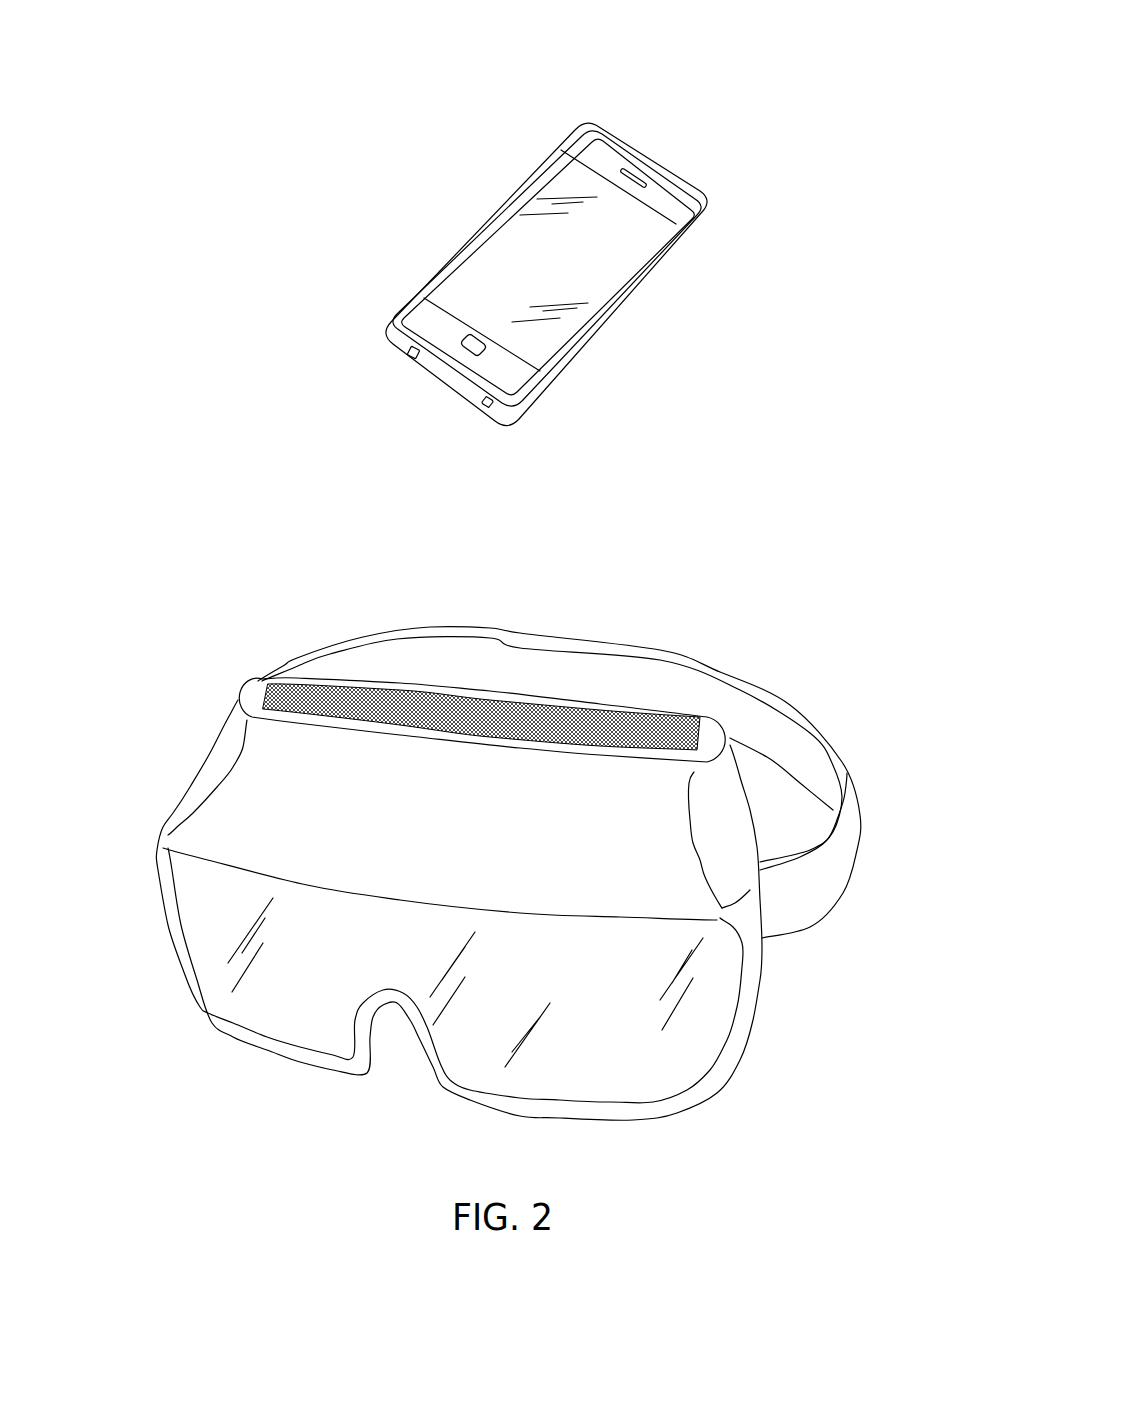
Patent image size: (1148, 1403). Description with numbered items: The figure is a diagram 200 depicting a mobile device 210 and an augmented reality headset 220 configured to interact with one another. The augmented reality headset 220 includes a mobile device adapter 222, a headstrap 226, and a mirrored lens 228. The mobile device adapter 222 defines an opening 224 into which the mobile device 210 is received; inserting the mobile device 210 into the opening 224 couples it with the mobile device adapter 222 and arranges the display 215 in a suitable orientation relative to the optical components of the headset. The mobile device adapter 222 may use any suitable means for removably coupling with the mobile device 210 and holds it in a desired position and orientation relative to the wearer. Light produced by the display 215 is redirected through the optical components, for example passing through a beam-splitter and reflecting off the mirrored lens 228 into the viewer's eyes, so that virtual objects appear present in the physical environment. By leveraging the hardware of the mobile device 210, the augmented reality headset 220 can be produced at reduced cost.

The diagram 200 is at (758, 45).
The mobile device 210 is at (672, 167).
The display 215 is at (493, 263).
The augmented reality headset 220 is at (184, 644).
The mobile device adapter 222 is at (180, 800).
The opening 224 is at (510, 713).
The headstrap 226 is at (837, 867).
The mirrored lens 228 is at (663, 1065).